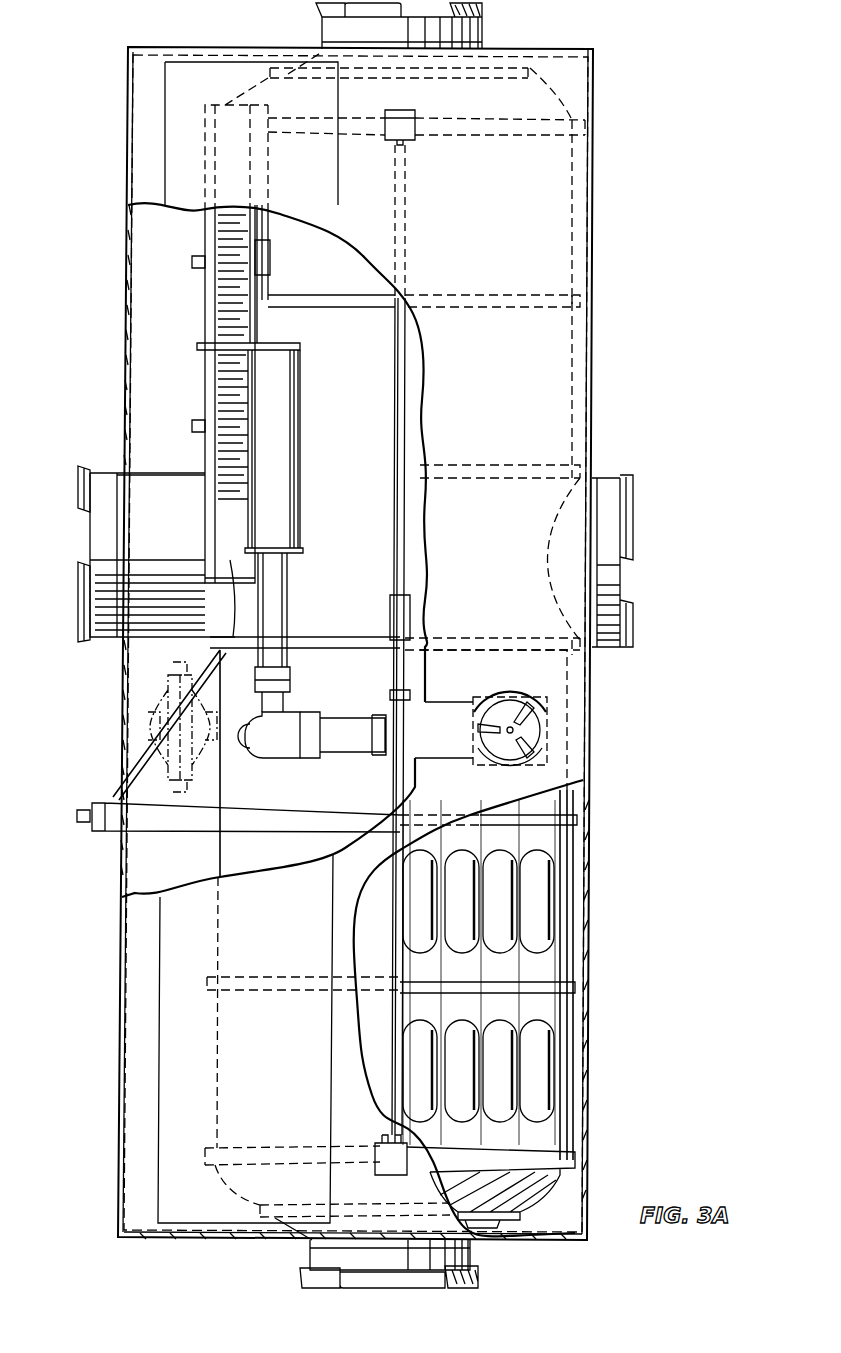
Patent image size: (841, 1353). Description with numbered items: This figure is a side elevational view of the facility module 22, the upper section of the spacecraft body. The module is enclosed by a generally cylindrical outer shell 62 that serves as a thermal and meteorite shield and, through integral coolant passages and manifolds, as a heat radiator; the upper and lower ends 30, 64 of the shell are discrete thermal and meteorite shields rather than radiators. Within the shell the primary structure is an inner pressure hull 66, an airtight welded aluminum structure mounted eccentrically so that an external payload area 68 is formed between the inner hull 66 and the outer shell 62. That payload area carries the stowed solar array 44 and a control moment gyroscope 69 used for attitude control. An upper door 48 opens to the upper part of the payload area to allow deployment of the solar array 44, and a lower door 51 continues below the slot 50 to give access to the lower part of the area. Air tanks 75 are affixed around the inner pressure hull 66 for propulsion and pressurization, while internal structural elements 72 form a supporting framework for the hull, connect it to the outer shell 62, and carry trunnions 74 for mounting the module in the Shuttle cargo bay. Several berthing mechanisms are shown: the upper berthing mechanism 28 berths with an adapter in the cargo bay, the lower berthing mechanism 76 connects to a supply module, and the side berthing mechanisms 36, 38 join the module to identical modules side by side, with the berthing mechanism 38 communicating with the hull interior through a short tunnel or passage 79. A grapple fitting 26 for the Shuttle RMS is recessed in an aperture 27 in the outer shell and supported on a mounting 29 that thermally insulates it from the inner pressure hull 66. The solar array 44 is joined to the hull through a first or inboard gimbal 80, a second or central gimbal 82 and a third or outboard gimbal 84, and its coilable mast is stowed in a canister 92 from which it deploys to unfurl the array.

The facility module 22 is at (615, 380).
The grapple fitting 26 is at (530, 732).
The aperture 27 is at (492, 690).
The upper berthing mechanism 28 is at (480, 26).
The mounting 29 is at (472, 745).
The upper end of the outer shell 30 is at (241, 47).
The berthing mechanism 36 is at (626, 500).
The berthing mechanism 38 is at (80, 497).
The solar array 44 is at (203, 315).
The upper door 48 is at (175, 76).
The slot 50 is at (430, 760).
The lower door 51 is at (169, 1090).
The outer shell 62 is at (592, 948).
The lower end of the outer shell 64 is at (168, 1240).
The inner pressure hull 66 is at (188, 872).
The external payload area 68 is at (142, 340).
The control moment gyroscope 69 is at (165, 690).
The internal structural element 72 is at (397, 348).
The trunnion 74 is at (84, 806).
The air tank 75 is at (454, 1034).
The lower berthing mechanism 76 is at (373, 1268).
The tunnel or passage 79 is at (178, 486).
The first or inboard gimbal 80 is at (346, 748).
The second or central gimbal 82 is at (272, 740).
The third or outboard gimbal 84 is at (283, 677).
The canister 92 is at (280, 408).